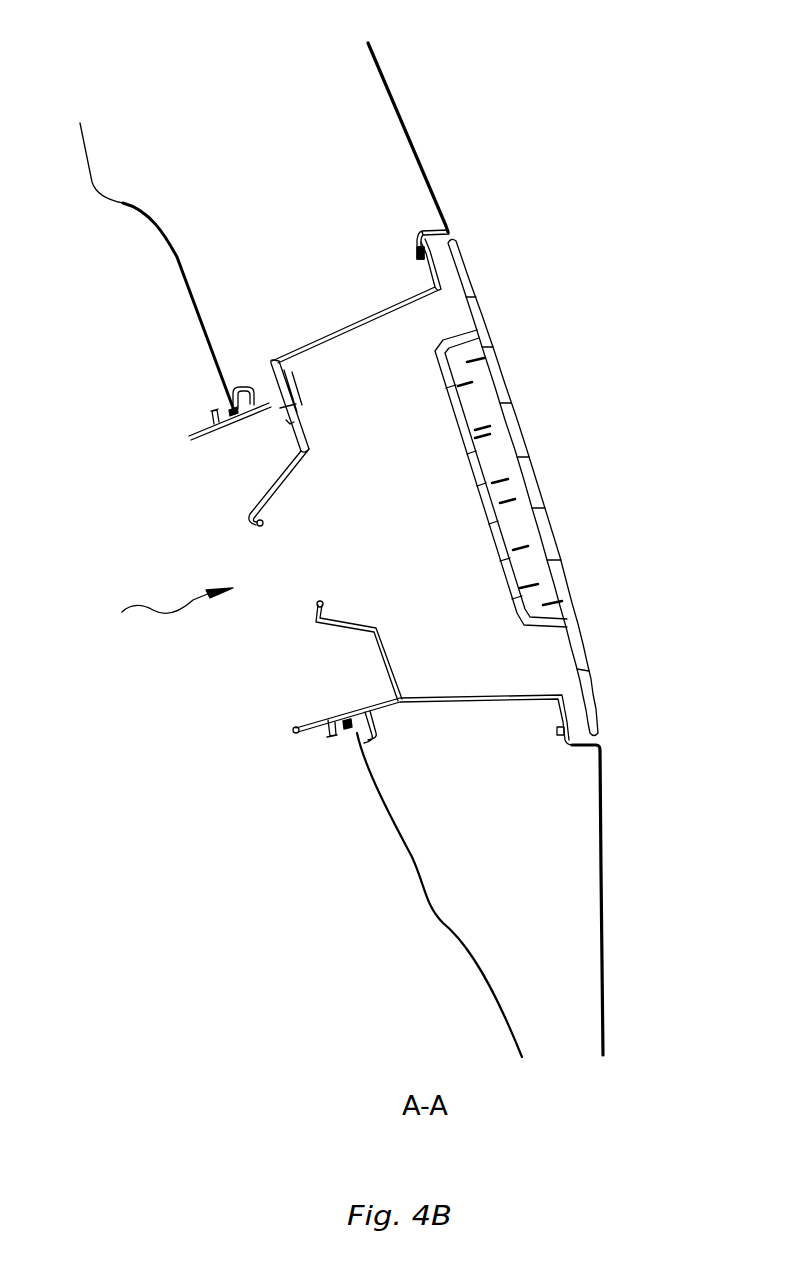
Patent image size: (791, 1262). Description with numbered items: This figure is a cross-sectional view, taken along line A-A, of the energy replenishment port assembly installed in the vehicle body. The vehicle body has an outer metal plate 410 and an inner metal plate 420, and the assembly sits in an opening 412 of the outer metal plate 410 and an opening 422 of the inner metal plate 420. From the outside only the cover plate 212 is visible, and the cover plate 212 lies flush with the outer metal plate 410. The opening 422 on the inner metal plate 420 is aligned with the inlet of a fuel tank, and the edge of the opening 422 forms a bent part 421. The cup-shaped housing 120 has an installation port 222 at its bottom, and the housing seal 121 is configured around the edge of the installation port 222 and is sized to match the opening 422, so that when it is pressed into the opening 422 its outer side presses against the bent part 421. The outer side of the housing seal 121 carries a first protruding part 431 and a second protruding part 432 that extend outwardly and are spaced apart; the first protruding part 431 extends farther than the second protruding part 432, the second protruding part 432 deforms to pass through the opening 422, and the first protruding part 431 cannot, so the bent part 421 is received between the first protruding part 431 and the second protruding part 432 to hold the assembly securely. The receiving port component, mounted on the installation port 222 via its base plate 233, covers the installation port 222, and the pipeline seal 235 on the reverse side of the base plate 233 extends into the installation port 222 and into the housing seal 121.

The housing 120 is at (508, 703).
The housing seal 121 is at (236, 438).
The cover plate 212 is at (587, 644).
The installation port 222 is at (370, 682).
The base plate 233 is at (285, 395).
The pipeline seal 235 is at (280, 478).
The outer metal plate 410 is at (380, 58).
The opening 412 is at (437, 241).
The inner metal plate 420 is at (143, 218).
The bent part 421 is at (230, 410).
The opening 422 is at (155, 610).
The first protruding part 431 is at (240, 388).
The second protruding part 432 is at (211, 413).